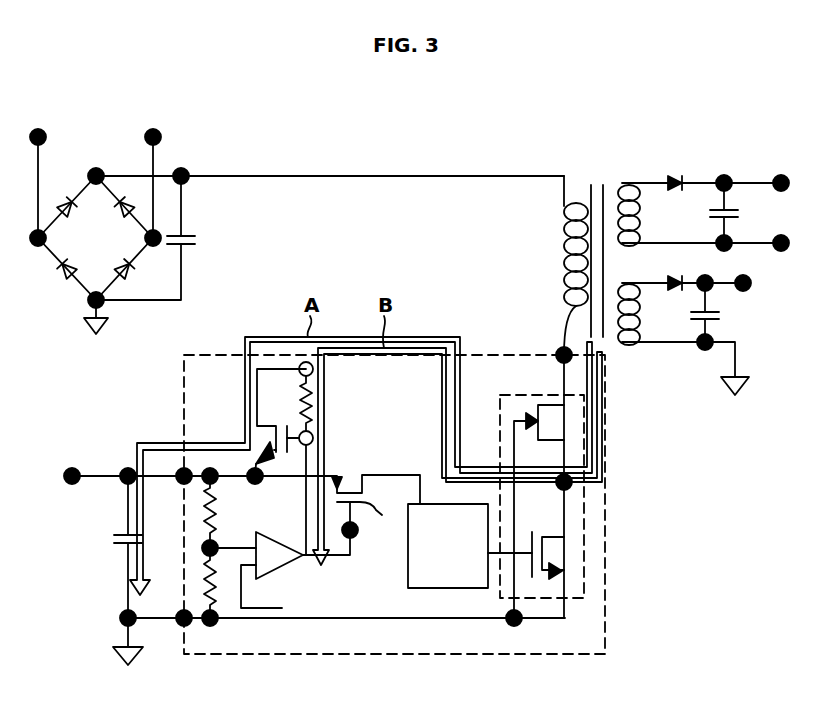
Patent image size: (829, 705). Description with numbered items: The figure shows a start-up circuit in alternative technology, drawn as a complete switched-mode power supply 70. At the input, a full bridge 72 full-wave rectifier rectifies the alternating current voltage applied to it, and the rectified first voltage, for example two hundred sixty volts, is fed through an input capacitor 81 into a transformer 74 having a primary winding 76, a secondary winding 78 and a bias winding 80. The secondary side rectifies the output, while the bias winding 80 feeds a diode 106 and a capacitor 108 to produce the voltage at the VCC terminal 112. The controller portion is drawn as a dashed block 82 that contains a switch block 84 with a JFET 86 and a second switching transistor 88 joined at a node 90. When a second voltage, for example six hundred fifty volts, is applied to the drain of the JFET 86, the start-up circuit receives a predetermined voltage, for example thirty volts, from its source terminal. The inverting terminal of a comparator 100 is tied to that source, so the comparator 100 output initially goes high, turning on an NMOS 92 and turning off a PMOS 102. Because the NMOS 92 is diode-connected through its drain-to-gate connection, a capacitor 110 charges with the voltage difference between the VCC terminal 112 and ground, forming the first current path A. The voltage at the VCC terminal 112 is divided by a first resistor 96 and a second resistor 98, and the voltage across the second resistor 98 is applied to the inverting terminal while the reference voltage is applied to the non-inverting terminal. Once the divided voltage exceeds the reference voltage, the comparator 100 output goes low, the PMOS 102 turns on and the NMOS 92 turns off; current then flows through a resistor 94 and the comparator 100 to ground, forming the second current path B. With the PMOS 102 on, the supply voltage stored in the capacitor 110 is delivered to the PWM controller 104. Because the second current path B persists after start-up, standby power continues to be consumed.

The power supply circuit 70 is at (292, 141).
The full bridge 72 is at (110, 251).
The transformer 74 is at (590, 185).
The primary winding 76 is at (564, 245).
The secondary winding 78 is at (621, 186).
The bias winding 80 is at (630, 348).
The input capacitor 81 is at (190, 236).
The controller circuit 82 is at (505, 355).
The switch circuit 84 is at (500, 397).
The JFET 86 is at (562, 406).
The second transistor 88 is at (566, 538).
The node 90 is at (563, 488).
The NMOS 92 is at (260, 422).
The resistor 94 is at (312, 390).
The first resistor 96 is at (215, 480).
The second resistor 98 is at (204, 576).
The comparator 100 is at (290, 565).
The PMOS 102 is at (376, 510).
The PWM controller 104 is at (466, 581).
The diode 106 is at (668, 281).
The capacitor 108 is at (720, 318).
The capacitor 110 is at (114, 536).
The VCC terminal 112 is at (749, 288).